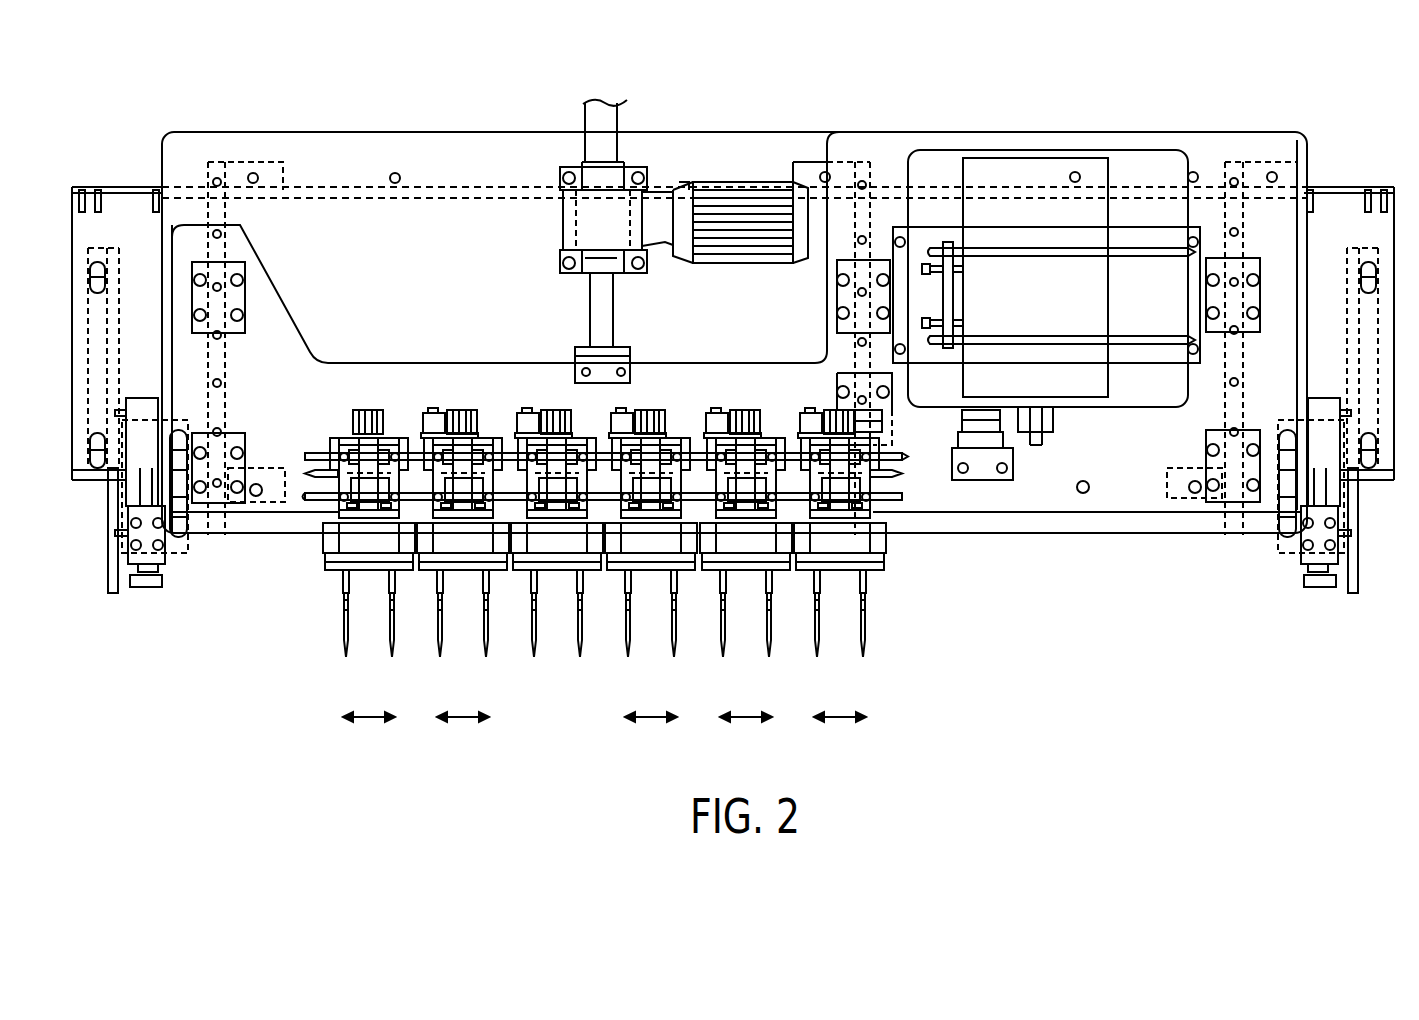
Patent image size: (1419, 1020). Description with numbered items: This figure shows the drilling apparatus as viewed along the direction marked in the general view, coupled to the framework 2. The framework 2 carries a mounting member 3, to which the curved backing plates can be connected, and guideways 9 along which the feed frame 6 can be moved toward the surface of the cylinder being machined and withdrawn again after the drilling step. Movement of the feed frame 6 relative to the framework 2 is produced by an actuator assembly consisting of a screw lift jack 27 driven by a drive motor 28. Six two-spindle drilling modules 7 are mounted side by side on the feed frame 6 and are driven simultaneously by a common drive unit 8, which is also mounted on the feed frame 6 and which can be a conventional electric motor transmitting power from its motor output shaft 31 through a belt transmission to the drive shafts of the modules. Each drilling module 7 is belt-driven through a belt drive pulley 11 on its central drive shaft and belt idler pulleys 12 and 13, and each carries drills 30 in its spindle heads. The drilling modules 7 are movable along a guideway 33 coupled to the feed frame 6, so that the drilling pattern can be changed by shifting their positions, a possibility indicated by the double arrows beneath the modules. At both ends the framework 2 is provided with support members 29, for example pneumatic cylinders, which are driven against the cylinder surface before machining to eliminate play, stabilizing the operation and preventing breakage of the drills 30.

The framework 2 is at (322, 153).
The mounting member 3 is at (143, 207).
The feed frame 6 is at (287, 427).
The drilling module 7 is at (320, 572).
The drive unit 8 is at (1070, 218).
The guideway 9 is at (207, 207).
The belt drive pulley 11 is at (371, 410).
The belt idler pulley 12 is at (790, 420).
The belt idler pulley 13 is at (884, 422).
The screw lift jack 27 is at (610, 190).
The drive motor 28 is at (770, 220).
The support member 29 is at (147, 543).
The drill 30 is at (865, 643).
The motor output shaft 31 is at (1055, 425).
The guideway 33 is at (904, 480).